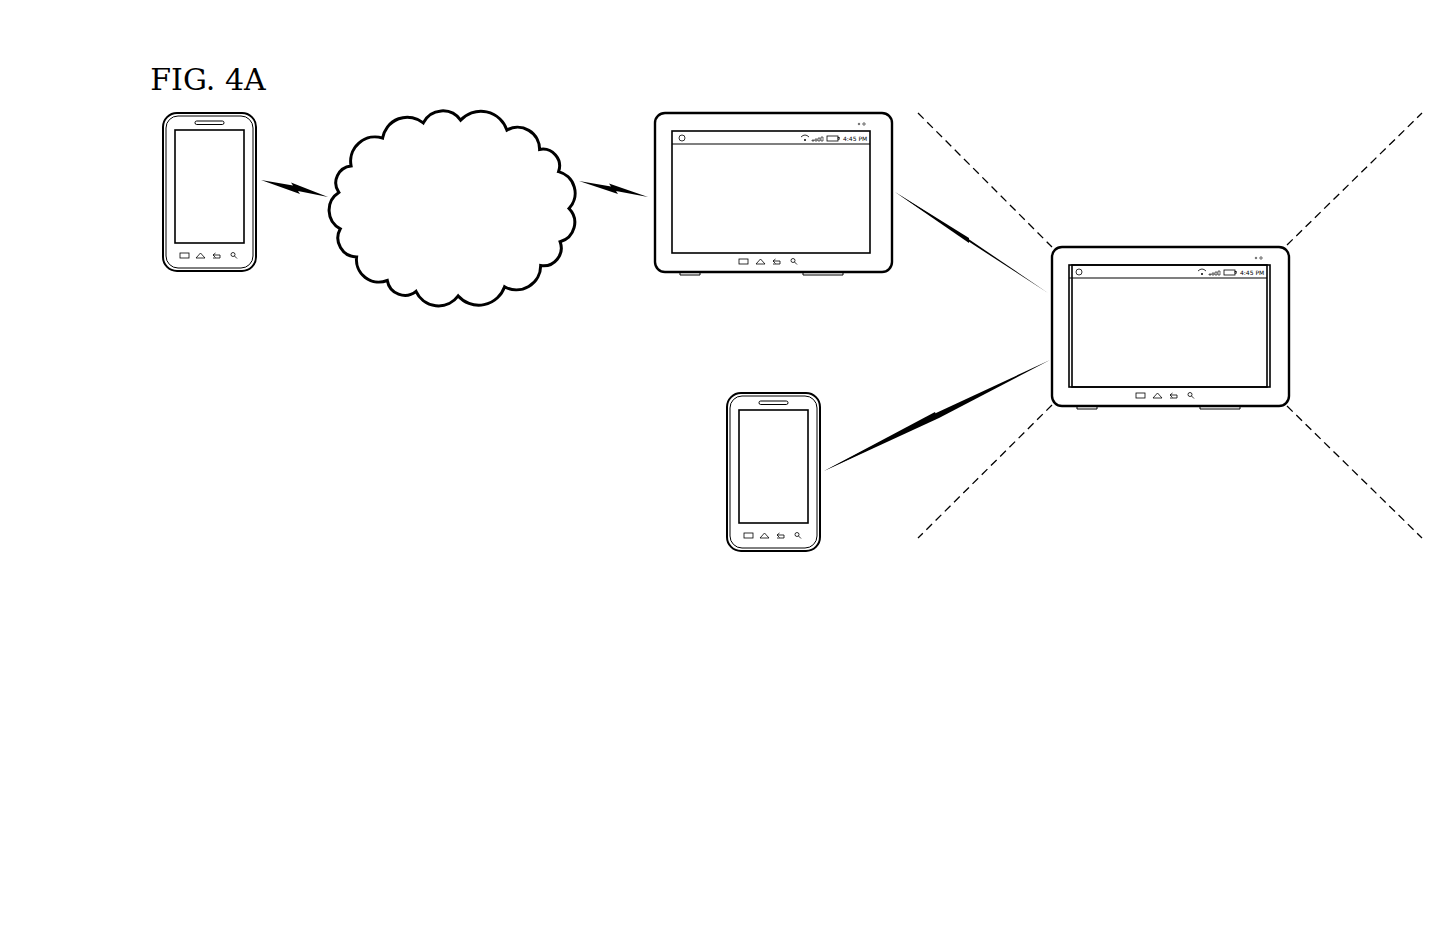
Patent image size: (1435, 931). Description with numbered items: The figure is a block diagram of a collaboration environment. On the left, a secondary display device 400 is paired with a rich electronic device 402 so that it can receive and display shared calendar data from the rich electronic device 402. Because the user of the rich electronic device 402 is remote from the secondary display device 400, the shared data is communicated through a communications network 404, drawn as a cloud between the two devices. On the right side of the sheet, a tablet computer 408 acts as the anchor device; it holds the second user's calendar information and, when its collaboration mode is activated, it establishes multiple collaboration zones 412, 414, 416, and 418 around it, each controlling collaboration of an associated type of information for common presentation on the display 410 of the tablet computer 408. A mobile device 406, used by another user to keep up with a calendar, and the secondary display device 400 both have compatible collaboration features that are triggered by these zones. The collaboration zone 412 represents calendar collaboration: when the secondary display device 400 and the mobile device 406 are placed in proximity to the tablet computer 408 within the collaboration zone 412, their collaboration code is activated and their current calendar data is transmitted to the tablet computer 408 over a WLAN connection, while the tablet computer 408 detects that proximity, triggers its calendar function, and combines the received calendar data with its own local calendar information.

The secondary display device 400 is at (773, 112).
The rich electronic device 402 is at (162, 193).
The communications network 404 is at (453, 112).
The mobile device 406 is at (772, 553).
The tablet computer 408 is at (1289, 295).
The display 410 is at (1259, 368).
The collaboration zone 412 is at (971, 265).
The collaboration zone 414 is at (1006, 422).
The collaboration zone 416 is at (1170, 437).
The collaboration zone 418 is at (1170, 180).